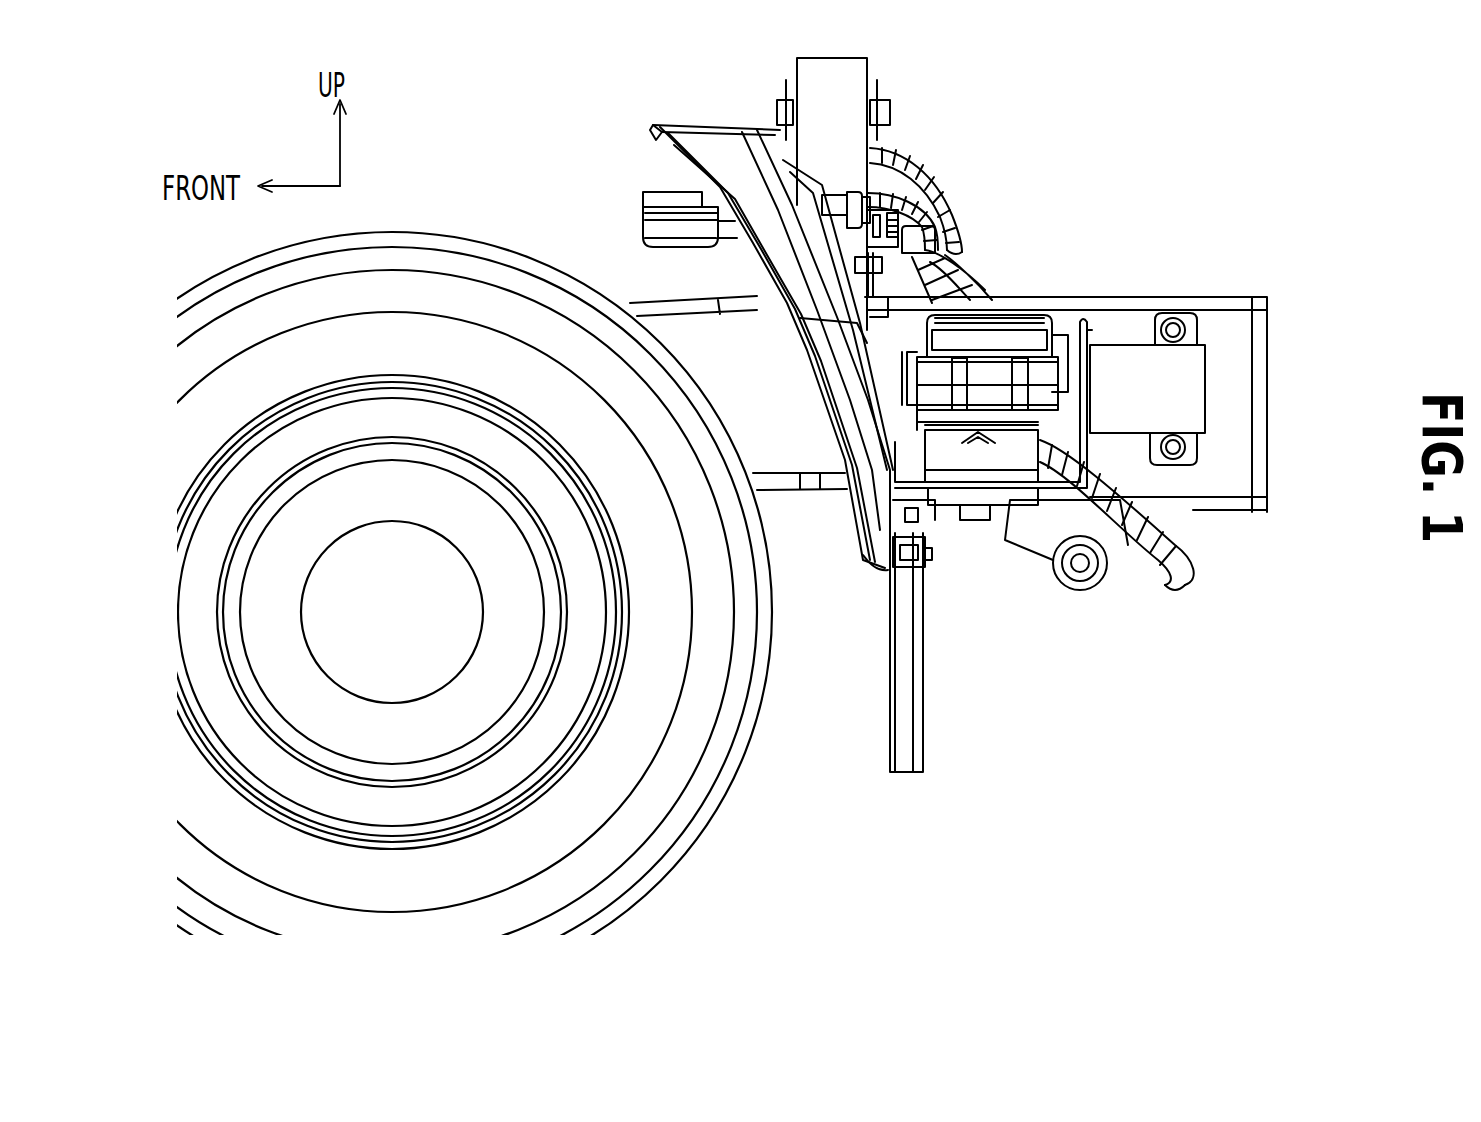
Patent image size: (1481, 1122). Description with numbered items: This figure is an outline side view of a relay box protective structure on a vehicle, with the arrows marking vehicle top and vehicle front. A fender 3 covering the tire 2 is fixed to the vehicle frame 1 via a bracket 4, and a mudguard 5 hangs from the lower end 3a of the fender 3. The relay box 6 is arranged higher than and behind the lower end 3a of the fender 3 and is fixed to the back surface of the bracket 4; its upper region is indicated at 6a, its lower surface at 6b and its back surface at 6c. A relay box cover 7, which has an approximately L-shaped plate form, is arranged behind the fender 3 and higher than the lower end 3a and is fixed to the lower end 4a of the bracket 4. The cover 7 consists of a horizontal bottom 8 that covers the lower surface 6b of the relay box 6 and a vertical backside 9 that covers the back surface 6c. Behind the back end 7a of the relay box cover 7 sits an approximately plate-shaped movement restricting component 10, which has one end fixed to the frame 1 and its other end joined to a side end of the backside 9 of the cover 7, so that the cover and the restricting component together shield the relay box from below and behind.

The vehicle frame 1 is at (1250, 335).
The tire 2 is at (402, 345).
The fender 3 is at (868, 483).
The lower end of the fender 3a is at (877, 572).
The bracket 4 is at (948, 283).
The lower end of the bracket 4a is at (925, 527).
The mudguard 5 is at (908, 768).
The relay box 6 is at (1030, 308).
The motor upper portion 6a is at (968, 314).
The lower surface of the relay box 6b is at (950, 425).
The back surface of the relay box 6c is at (1066, 340).
The relay box cover 7 is at (1058, 455).
The back end of the relay box cover 7a is at (1120, 540).
The horizontal bottom 8 is at (1002, 500).
The vertical backside 9 is at (1092, 350).
The movement restricting component 10 is at (1192, 402).